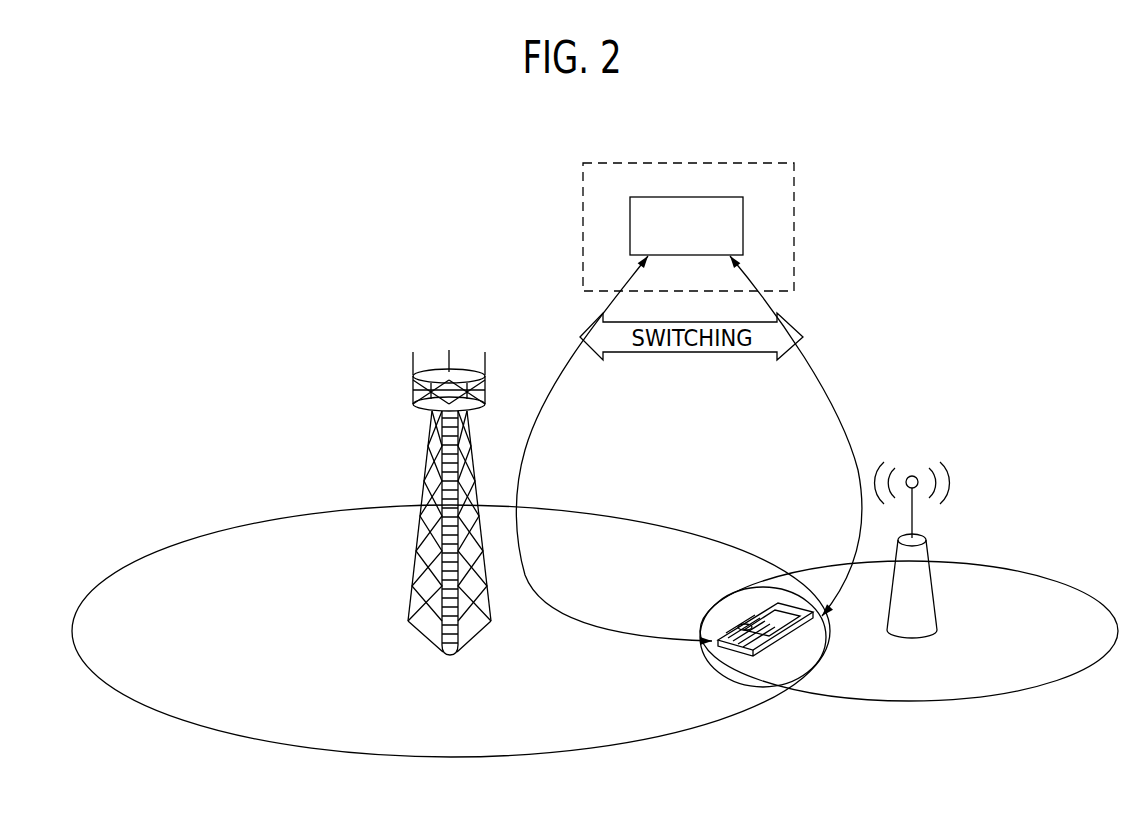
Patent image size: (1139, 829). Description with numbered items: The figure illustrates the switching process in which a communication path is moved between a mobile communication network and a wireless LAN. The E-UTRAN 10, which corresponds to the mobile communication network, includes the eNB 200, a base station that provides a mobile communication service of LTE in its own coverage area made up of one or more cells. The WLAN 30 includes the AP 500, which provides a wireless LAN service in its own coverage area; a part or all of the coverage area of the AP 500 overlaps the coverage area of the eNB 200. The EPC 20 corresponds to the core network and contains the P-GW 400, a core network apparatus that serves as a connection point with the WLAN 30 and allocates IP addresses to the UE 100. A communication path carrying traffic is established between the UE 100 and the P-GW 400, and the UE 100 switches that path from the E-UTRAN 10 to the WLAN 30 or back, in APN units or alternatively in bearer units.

The E-UTRAN 10 is at (368, 351).
The EPC 20 is at (742, 162).
The wireless LAN (WLAN) 30 is at (1005, 457).
The user equipment (UE) 100 is at (773, 647).
The eNB 200 is at (430, 457).
The P-GW 400 is at (744, 228).
The access point (AP) 500 is at (915, 595).